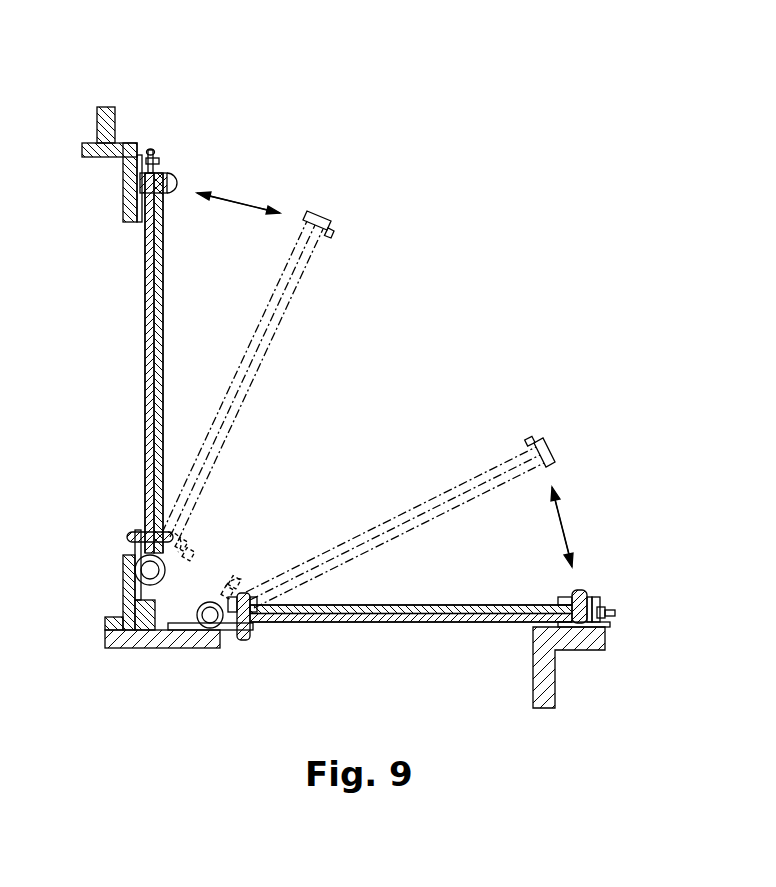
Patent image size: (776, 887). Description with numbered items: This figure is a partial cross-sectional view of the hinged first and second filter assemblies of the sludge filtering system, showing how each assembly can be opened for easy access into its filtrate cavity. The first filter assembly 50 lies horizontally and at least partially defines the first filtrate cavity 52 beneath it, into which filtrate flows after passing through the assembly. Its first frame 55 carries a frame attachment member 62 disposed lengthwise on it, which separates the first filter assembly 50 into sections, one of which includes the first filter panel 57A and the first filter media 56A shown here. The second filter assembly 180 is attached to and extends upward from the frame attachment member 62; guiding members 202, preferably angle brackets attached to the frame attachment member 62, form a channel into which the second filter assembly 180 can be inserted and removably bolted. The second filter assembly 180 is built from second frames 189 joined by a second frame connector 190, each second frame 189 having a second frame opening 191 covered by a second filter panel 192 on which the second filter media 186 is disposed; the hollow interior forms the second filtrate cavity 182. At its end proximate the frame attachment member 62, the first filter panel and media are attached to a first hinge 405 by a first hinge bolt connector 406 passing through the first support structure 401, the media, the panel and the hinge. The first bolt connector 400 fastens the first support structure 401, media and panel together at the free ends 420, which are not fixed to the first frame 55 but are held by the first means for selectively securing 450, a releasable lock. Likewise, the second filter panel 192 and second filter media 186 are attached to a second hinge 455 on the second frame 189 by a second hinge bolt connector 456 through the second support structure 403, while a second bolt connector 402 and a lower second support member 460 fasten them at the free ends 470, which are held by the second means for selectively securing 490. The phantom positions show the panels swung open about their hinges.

The first filter assembly 50 is at (633, 605).
The first filtrate cavity 52 is at (411, 617).
The first frame 55 is at (533, 688).
The first filter media 56A is at (440, 605).
The first filter panel 57A is at (445, 622).
The frame attachment member 62 is at (148, 648).
The second filter assembly 180 is at (195, 107).
The second filtrate cavity 182 is at (158, 363).
The second filter media 186 is at (163, 282).
The second frame 189 is at (123, 183).
The second frame connector 190 is at (118, 143).
The second frame opening 191 is at (130, 222).
The second filter panel 192 is at (143, 318).
The guiding member 202 is at (157, 608).
The first bolt connector 400 is at (574, 592).
The first support structure 401 is at (262, 598).
The second bolt connector 402 is at (172, 183).
The second support structure 403 is at (167, 178).
The first hinge 405 is at (242, 660).
The first hinge bolt connector 406 is at (250, 598).
The free ends 420 is at (688, 558).
The first means for selectively securing 450 is at (668, 621).
The second hinge 455 is at (189, 553).
The second hinge bolt connector 456 is at (175, 538).
The lower second support member 460 is at (138, 195).
The free ends 470 is at (169, 105).
The second means for selectively securing 490 is at (216, 129).